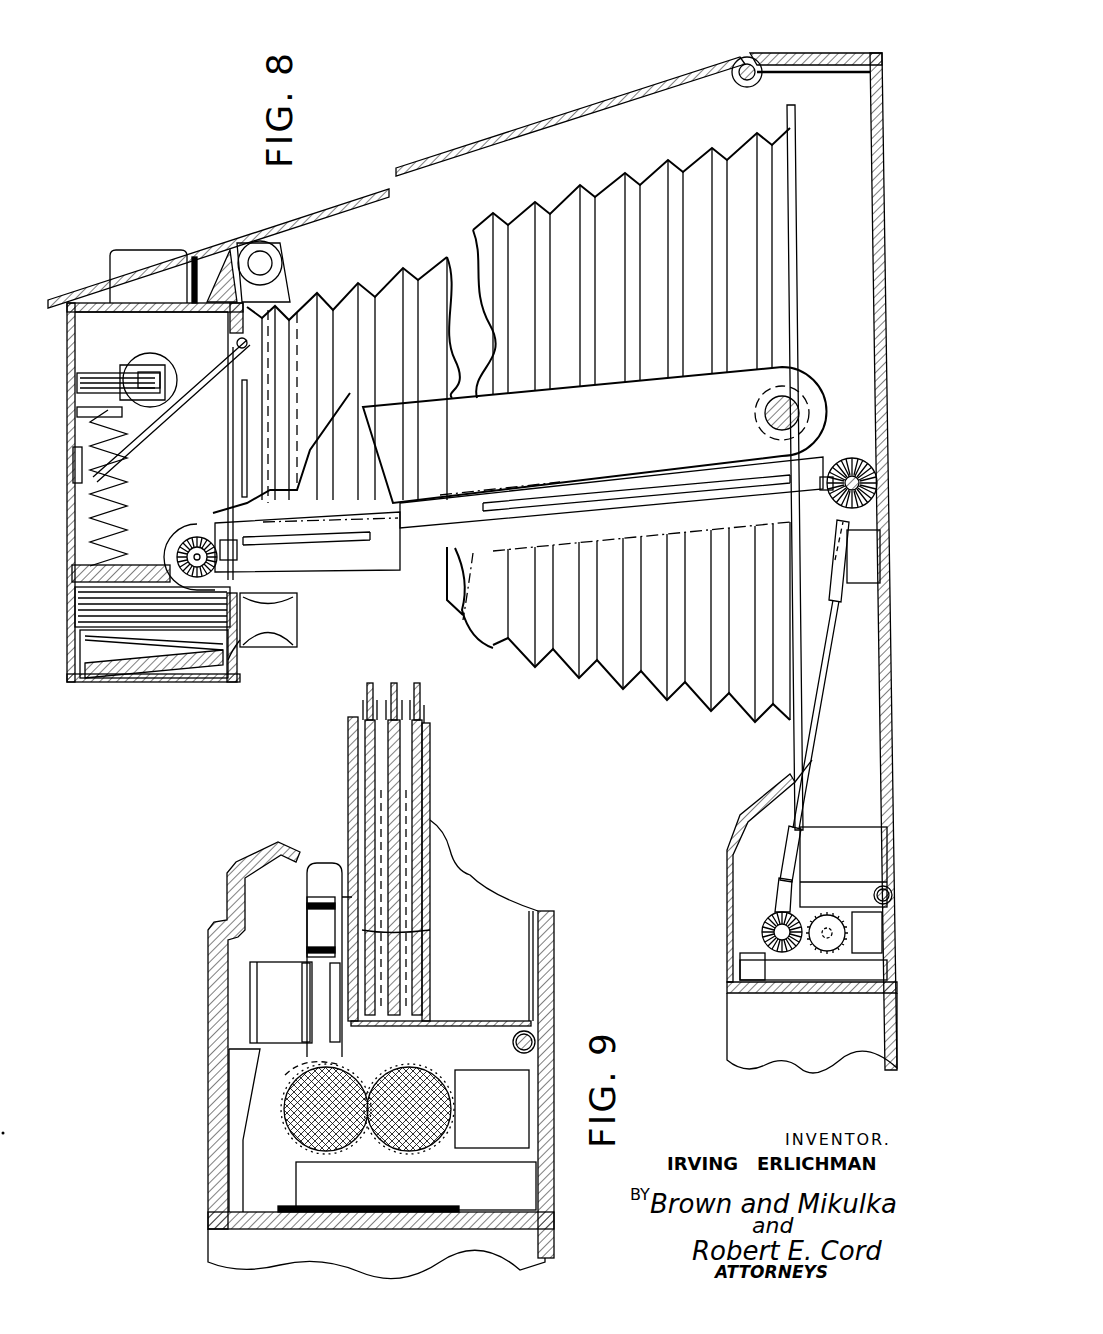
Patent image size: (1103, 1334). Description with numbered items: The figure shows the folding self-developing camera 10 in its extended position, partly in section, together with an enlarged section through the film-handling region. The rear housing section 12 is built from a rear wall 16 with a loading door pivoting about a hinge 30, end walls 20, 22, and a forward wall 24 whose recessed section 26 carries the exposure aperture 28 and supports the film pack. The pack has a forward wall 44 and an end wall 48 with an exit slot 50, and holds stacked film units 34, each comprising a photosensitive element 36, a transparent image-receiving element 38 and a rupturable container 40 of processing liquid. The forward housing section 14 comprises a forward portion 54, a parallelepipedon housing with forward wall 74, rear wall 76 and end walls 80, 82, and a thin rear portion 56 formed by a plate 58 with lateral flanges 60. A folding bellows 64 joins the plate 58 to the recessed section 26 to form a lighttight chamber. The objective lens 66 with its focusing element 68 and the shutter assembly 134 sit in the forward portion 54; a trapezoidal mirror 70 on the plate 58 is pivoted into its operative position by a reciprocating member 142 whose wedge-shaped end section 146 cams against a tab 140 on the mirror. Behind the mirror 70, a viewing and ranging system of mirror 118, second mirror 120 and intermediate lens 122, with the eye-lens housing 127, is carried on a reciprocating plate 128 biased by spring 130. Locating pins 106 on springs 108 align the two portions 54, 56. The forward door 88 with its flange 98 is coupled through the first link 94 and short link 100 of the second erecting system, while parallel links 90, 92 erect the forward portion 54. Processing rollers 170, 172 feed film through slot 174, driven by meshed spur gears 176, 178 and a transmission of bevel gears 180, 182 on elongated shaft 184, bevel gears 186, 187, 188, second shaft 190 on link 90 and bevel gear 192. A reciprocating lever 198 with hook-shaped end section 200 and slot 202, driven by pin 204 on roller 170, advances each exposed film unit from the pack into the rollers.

In FIG. 8, the camera 10 is at (563, 700).
In FIG. 8, the rear housing section 12 is at (895, 290).
In FIG. 8, the forward housing section 14 is at (68, 690).
In FIG. 8, the rear wall 16 is at (885, 178).
In FIG. 9, the rear wall 16 is at (556, 1185).
In FIG. 8, the end wall 20 is at (850, 995).
In FIG. 9, the end wall 20 is at (450, 1222).
In FIG. 8, the end wall 22 is at (830, 53).
In FIG. 8, the forward wall 24 is at (740, 930).
In FIG. 8, the recessed section 26 is at (738, 830).
In FIG. 8, the exposure aperture 28 is at (795, 140).
In FIG. 8, the hinge 30 is at (892, 900).
In FIG. 9, the hinge 30 is at (535, 1035).
In FIG. 9, the film units 34 is at (422, 876).
In FIG. 9, the photosensitive element 36 is at (370, 683).
In FIG. 9, the image-receiving element 38 is at (404, 700).
In FIG. 9, the rupturable container 40 is at (430, 930).
In FIG. 8, the forward wall 44 is at (755, 58).
In FIG. 9, the forward wall 44 is at (350, 830).
In FIG. 9, the end wall 48 is at (520, 1015).
In FIG. 9, the exit slot 50 is at (345, 1027).
In FIG. 8, the forward portion 54 is at (66, 552).
In FIG. 8, the rear portion 56 is at (284, 655).
In FIG. 8, the plate 58 is at (232, 292).
In FIG. 8, the lateral flanges 60 is at (298, 608).
In FIG. 8, the folding bellows 64 is at (615, 185).
In FIG. 8, the objective lens 66 is at (167, 688).
In FIG. 8, the lens element 68 is at (125, 680).
In FIG. 8, the mirror 70 is at (135, 425).
In FIG. 8, the forward wall 74 is at (70, 428).
In FIG. 8, the rear wall 76 is at (238, 660).
In FIG. 8, the end wall 80 is at (235, 682).
In FIG. 8, the end wall 82 is at (92, 300).
In FIG. 8, the forward door 88 is at (370, 194).
In FIG. 8, the first link 90 is at (660, 490).
In FIG. 8, the second link 92 is at (625, 385).
In FIG. 8, the first link 94 is at (608, 685).
In FIG. 8, the flange 98 is at (208, 255).
In FIG. 8, the short link 100 is at (275, 259).
In FIG. 8, the locating pins 106 is at (249, 388).
In FIG. 8, the springs 108 is at (240, 440).
In FIG. 8, the mirror 118 is at (112, 372).
In FIG. 8, the second mirror 120 is at (128, 366).
In FIG. 8, the intermediate lens 122 is at (149, 365).
In FIG. 8, the housing 127 is at (110, 250).
In FIG. 8, the plate 128 is at (72, 447).
In FIG. 8, the spring 130 is at (132, 492).
In FIG. 8, the shutter assembly 134 is at (88, 605).
In FIG. 8, the tab 140 is at (162, 376).
In FIG. 8, the member 142 is at (196, 435).
In FIG. 8, the wedge-shaped end section 146 is at (230, 345).
In FIG. 9, the pressure-applying roller 170 is at (280, 1112).
In FIG. 9, the pressure-applying roller 172 is at (440, 1050).
In FIG. 8, the slot 174 is at (800, 990).
In FIG. 9, the slot 174 is at (356, 1214).
In FIG. 8, the spur gear 176 is at (760, 940).
In FIG. 9, the spur gear 176 is at (293, 1143).
In FIG. 8, the spur gear 178 is at (840, 955).
In FIG. 9, the spur gear 178 is at (425, 1065).
In FIG. 8, the bevel gear 180 is at (762, 940).
In FIG. 8, the bevel gear 182 is at (760, 912).
In FIG. 8, the elongated shaft 184 is at (815, 712).
In FIG. 8, the bevel gear 186 is at (828, 515).
In FIG. 8, the bevel gear 187 is at (855, 457).
In FIG. 8, the bevel gear 188 is at (760, 425).
In FIG. 8, the second shaft 190 is at (355, 535).
In FIG. 8, the bevel gear 192 is at (208, 535).
In FIG. 9, the reciprocating lever 198 is at (310, 915).
In FIG. 9, the hook-shaped end section 200 is at (333, 868).
In FIG. 9, the slot 202 is at (368, 1155).
In FIG. 9, the pin 204 is at (284, 1075).